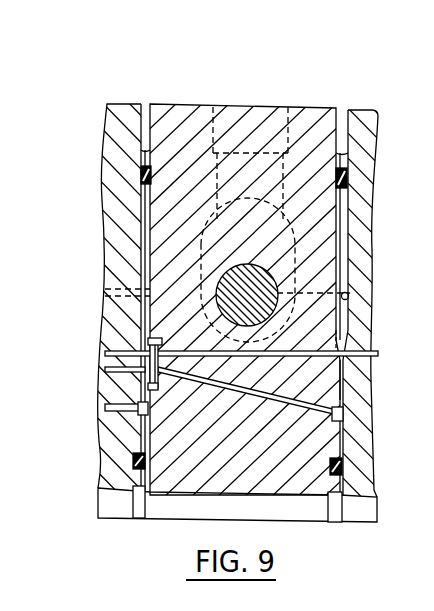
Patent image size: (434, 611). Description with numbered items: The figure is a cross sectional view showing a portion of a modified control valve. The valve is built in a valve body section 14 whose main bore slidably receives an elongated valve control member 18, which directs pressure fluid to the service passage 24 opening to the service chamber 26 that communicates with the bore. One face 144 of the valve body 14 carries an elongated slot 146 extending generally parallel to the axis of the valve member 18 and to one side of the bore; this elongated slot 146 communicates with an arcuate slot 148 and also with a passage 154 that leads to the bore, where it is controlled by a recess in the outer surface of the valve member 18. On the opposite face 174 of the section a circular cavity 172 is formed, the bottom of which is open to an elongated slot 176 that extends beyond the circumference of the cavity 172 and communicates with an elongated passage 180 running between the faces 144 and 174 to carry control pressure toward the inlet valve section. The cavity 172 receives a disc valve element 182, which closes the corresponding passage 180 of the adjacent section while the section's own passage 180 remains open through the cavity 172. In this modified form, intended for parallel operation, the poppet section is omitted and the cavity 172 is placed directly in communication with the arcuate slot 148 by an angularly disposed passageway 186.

The valve body section 14 is at (180, 106).
The service passage 24 is at (281, 118).
The service chamber 26 is at (207, 221).
The valve control member 18 is at (240, 267).
The passage 154 is at (313, 290).
The face of the valve body 144 is at (348, 233).
The elongated slot 146 is at (349, 296).
The disc valve element 182 is at (152, 338).
The elongated slot 176 is at (162, 344).
The elongated passage 180 is at (218, 351).
The arcuate slot 148 is at (338, 377).
The cavity 172 is at (151, 398).
The angularly disposed passageway 186 is at (295, 408).
The face of the valve section 174 is at (148, 437).